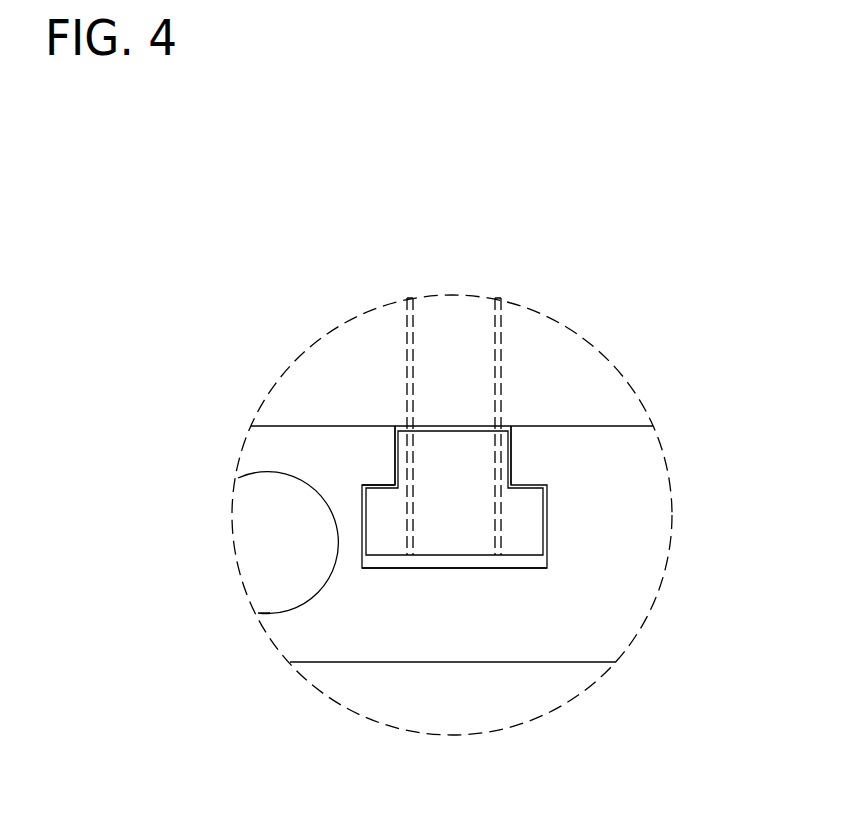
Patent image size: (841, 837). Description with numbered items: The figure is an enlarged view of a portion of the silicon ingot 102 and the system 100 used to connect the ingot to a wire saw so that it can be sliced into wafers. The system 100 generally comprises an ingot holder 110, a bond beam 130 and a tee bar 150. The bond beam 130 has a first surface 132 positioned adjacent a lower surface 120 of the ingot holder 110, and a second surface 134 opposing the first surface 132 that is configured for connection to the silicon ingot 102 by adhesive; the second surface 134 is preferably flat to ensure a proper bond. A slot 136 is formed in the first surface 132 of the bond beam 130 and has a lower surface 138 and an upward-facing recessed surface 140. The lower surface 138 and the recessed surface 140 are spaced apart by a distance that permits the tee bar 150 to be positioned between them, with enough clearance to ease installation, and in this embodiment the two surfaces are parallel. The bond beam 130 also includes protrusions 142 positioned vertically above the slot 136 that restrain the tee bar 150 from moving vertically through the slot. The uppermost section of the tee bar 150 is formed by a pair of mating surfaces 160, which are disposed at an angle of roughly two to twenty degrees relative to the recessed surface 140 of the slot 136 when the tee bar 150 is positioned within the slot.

The system 100 is at (440, 329).
The silicon ingot 102 is at (522, 695).
The ingot holder 110 is at (551, 380).
The lower surface 120 is at (585, 426).
The bond beam 130 is at (568, 558).
The first surface 132 is at (627, 427).
The second surface 134 is at (597, 662).
The slot 136 is at (449, 426).
The lower surface 138 is at (390, 565).
The recessed surface 140 is at (392, 484).
The protrusion 142 is at (384, 447).
The tee bar 150 is at (429, 565).
The mating surface 160 is at (392, 487).